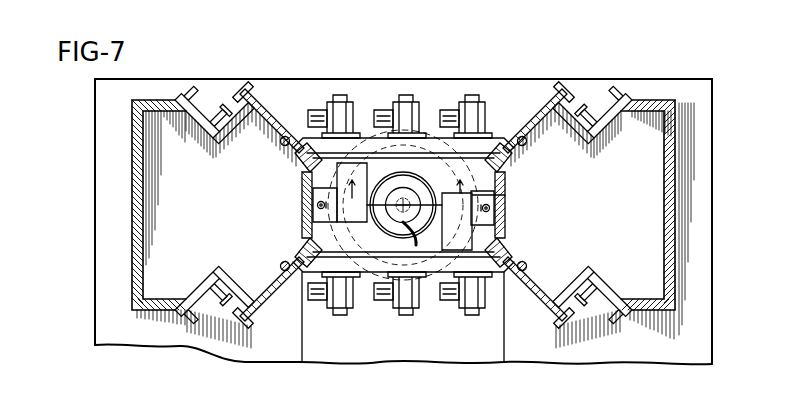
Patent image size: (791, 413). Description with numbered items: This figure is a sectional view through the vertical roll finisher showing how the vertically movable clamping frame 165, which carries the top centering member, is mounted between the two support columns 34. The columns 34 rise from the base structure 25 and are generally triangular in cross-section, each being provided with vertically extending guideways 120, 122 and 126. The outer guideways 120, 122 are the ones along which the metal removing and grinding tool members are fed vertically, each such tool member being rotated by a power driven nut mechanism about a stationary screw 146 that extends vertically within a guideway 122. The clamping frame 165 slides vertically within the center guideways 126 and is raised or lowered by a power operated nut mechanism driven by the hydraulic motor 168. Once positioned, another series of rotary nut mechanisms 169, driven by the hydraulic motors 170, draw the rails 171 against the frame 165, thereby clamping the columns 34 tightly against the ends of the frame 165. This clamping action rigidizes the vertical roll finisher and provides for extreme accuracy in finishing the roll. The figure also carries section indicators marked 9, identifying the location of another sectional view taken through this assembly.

The base structure 25 is at (101, 128).
The support columns 34 is at (137, 193).
The guideway 120 is at (223, 100).
The guideway 122 is at (256, 100).
The center guideway 126 is at (312, 187).
The stationary screw 146 is at (281, 145).
The clamping frame 165 is at (431, 246).
The hydraulic motor 168 is at (498, 196).
The rotary nut mechanisms 169 is at (393, 107).
The hydraulic motors 170 is at (319, 112).
The rails 171 is at (299, 145).
The section line indicator 9 is at (400, 192).